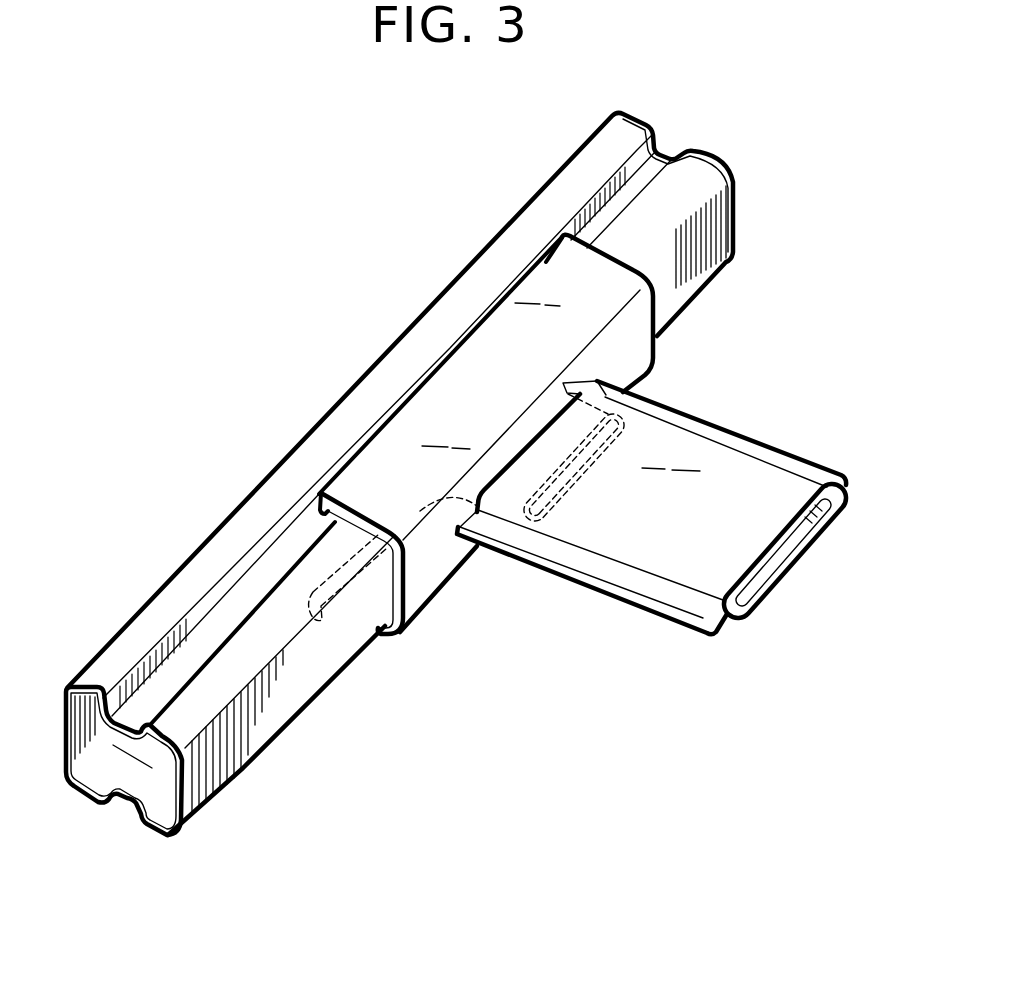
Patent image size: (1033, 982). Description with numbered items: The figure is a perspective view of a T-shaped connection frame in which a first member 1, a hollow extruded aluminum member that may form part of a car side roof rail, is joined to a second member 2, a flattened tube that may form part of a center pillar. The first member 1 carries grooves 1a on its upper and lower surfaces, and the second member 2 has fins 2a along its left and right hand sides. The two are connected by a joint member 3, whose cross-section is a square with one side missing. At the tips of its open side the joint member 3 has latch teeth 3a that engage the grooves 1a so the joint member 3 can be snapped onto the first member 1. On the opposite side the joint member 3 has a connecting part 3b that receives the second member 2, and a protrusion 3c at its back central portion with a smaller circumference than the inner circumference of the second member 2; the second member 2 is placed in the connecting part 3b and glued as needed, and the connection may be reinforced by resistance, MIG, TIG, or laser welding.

The first member 1 is at (412, 347).
The grooves 1a is at (214, 626).
The second member 2 is at (693, 570).
The fins 2a is at (784, 464).
The joint member 3 is at (419, 592).
The latch teeth 3a is at (314, 494).
The connecting part 3b is at (531, 530).
The protrusion 3c is at (608, 389).